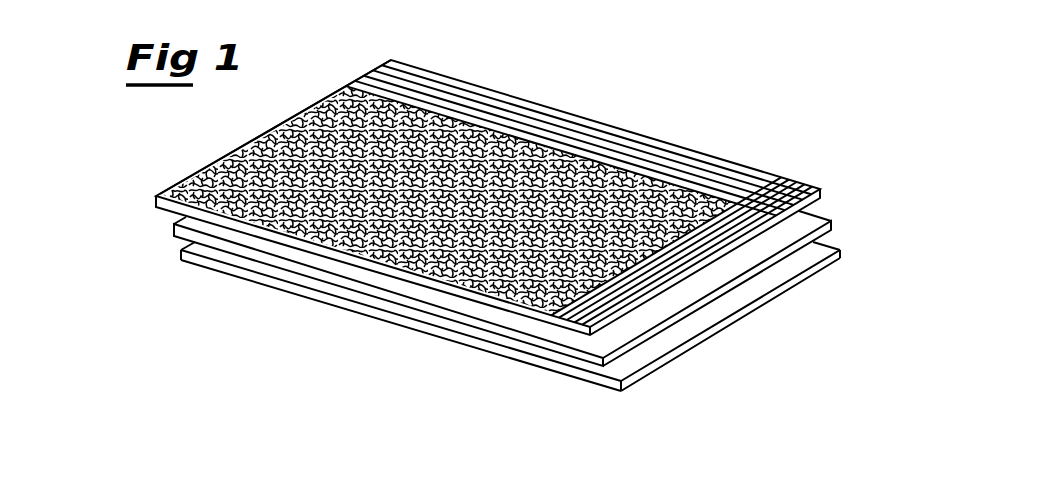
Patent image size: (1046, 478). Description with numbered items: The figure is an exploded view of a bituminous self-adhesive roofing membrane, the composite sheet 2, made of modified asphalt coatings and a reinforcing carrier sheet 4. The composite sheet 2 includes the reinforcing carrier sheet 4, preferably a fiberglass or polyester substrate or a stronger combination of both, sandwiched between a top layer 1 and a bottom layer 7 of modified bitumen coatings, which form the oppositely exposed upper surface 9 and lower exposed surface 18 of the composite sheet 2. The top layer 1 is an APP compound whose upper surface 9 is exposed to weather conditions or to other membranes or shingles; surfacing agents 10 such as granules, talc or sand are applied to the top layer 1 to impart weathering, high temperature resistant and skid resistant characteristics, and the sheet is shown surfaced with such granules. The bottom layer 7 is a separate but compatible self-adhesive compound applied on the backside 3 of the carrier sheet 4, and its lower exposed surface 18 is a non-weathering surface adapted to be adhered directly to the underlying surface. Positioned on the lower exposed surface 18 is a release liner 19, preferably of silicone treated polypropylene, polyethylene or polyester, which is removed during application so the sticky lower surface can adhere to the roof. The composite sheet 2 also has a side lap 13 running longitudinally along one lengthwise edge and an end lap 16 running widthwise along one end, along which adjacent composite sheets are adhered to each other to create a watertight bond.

The top layer 1 is at (145, 193).
The composite sheet 2 is at (590, 92).
The backside 3 is at (166, 228).
The reinforcing carrier sheet 4 is at (811, 207).
The bottom layer 7 is at (817, 262).
The upper surface 9 is at (243, 135).
The surfacing agents 10 is at (315, 92).
The side lap 13 is at (483, 92).
The end lap 16 is at (707, 238).
The lower exposed surface 18 is at (683, 340).
The release liner 19 is at (483, 348).